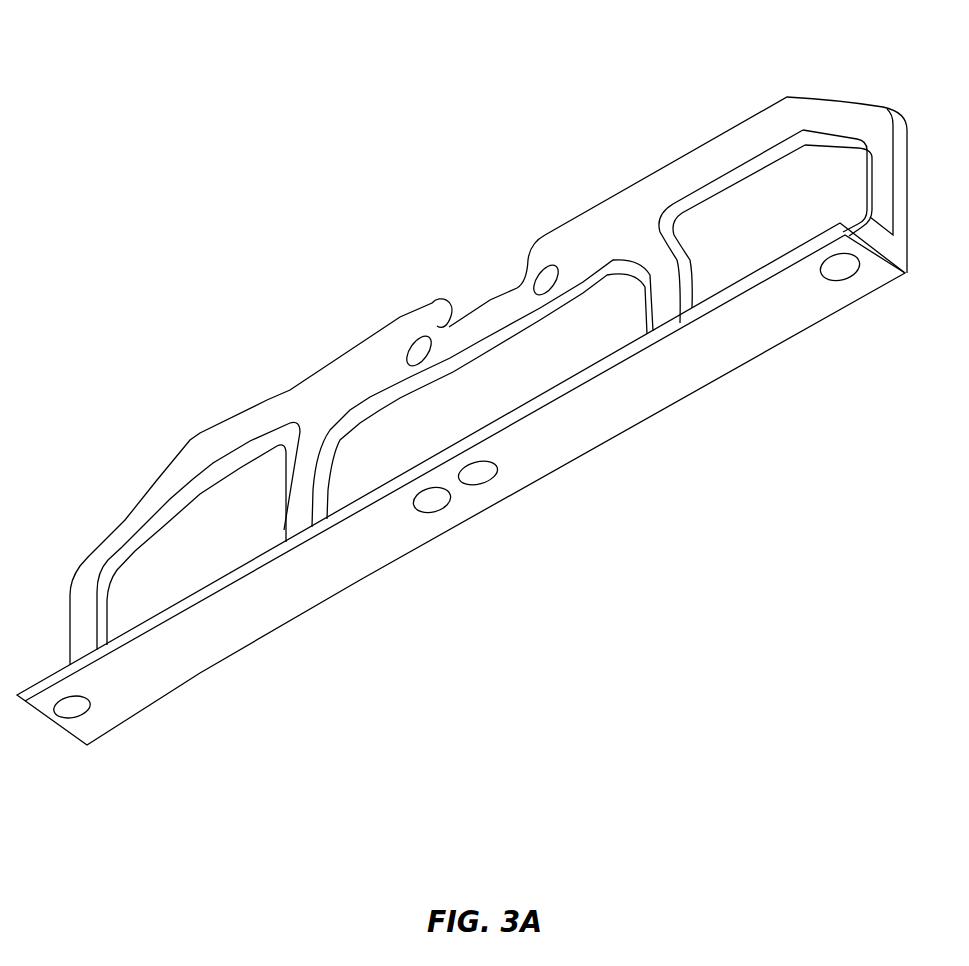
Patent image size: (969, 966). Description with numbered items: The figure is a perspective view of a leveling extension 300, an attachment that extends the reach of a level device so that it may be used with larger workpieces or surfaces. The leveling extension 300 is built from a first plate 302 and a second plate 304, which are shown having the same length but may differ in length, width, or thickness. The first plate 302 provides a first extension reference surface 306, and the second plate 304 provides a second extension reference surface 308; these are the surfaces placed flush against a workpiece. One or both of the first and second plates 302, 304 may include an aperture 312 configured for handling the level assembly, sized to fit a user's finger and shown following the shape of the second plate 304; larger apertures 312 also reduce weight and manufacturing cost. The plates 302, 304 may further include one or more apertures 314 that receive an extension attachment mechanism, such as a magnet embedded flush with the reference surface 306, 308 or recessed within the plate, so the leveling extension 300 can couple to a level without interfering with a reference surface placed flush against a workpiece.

The leveling extension 300 is at (753, 52).
The first plate 302 is at (651, 382).
The second plate 304 is at (338, 375).
The first extension reference surface 306 is at (388, 527).
The second extension reference surface 308 is at (907, 185).
The aperture 312 is at (217, 535).
The aperture 314 is at (415, 342).